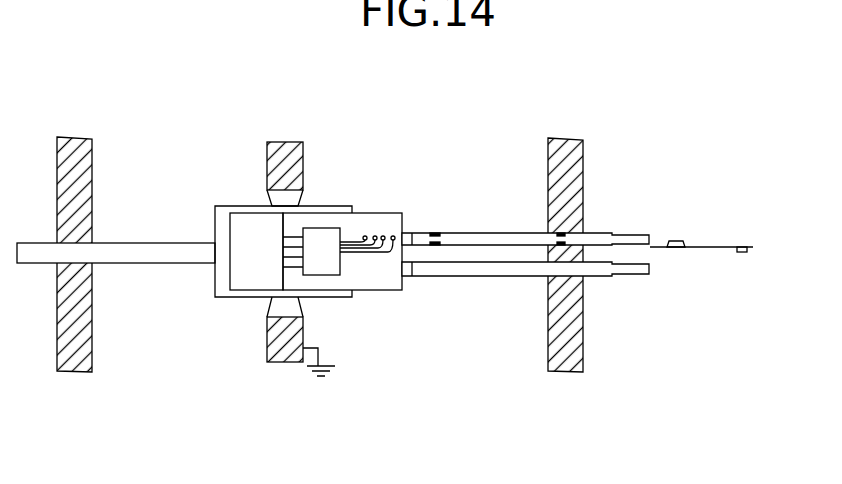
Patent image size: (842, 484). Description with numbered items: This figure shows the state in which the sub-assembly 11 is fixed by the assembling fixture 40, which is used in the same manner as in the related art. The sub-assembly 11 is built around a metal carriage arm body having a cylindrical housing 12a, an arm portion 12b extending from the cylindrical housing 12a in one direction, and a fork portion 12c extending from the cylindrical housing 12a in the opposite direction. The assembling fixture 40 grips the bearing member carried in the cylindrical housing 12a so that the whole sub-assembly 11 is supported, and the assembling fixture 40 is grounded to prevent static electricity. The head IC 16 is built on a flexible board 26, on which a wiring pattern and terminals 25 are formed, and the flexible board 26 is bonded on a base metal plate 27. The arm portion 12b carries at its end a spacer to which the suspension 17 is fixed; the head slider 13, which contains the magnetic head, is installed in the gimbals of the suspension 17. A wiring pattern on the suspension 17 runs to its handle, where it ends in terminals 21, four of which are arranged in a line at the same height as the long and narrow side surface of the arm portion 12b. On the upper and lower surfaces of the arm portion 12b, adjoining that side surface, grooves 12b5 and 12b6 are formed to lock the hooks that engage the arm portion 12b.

The fork portion 12c is at (139, 247).
The cylindrical housing 12a is at (230, 206).
The assembling fixture 40 is at (320, 143).
The terminals 25 is at (383, 233).
The head IC 16 is at (323, 268).
The flexible board 26 is at (384, 279).
The base metal plate 27 is at (385, 283).
The sub-assembly 11 is at (429, 214).
The arm portion 12b is at (500, 237).
The groove 12b6 is at (437, 230).
The groove 12b5 is at (562, 230).
The suspension 17 is at (698, 248).
The terminals 21 is at (675, 240).
The head slider 13 is at (742, 252).